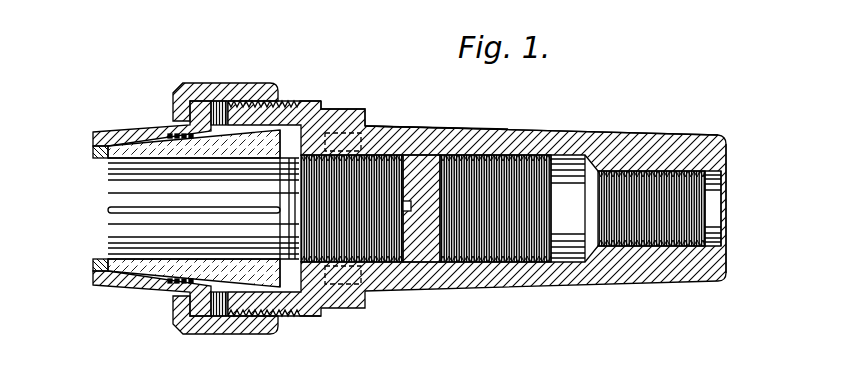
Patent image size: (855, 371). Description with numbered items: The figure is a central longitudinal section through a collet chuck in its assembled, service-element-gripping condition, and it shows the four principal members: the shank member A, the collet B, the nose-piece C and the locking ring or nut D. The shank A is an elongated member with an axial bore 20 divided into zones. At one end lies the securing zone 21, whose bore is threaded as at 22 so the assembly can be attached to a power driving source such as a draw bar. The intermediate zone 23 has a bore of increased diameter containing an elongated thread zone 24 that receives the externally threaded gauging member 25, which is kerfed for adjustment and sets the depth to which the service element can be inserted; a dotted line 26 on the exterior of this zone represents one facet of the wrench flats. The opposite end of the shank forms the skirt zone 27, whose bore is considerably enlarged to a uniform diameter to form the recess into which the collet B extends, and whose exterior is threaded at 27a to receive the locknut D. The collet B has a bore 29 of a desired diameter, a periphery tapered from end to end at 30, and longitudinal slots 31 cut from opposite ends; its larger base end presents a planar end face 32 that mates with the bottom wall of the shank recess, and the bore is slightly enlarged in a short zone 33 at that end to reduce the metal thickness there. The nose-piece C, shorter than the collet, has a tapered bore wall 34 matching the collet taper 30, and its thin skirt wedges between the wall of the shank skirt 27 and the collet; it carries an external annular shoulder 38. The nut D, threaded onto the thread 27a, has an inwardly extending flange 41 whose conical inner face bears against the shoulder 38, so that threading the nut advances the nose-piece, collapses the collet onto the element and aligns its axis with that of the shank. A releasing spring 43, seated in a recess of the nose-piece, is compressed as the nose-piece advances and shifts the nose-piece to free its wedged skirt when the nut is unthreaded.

The shank member A is at (533, 118).
The collet B is at (83, 192).
The nose-piece C is at (140, 118).
The locking ring or nut D is at (236, 75).
The axial bore 20 is at (708, 210).
The securing zone 21 is at (670, 126).
The threaded bore portion 22 is at (633, 240).
The intermediate zone 23 is at (425, 118).
The elongated thread zone 24 is at (463, 256).
The gauging member 25 is at (412, 251).
The wrench formation facet 26 is at (333, 278).
The skirt zone 27 is at (283, 93).
The external skirt thread 27a is at (283, 310).
The collet bore 29 is at (97, 236).
The tapered periphery 30 is at (236, 289).
The longitudinal slots 31 is at (192, 237).
The end face of collet base 32 is at (323, 101).
The enlarged bore zone 33 is at (277, 256).
The tapered bore wall of nose-piece 34 is at (150, 268).
The external annular shoulder 38 is at (190, 288).
The inwardly extending flange 41 is at (178, 76).
The releasing spring 43 is at (165, 277).